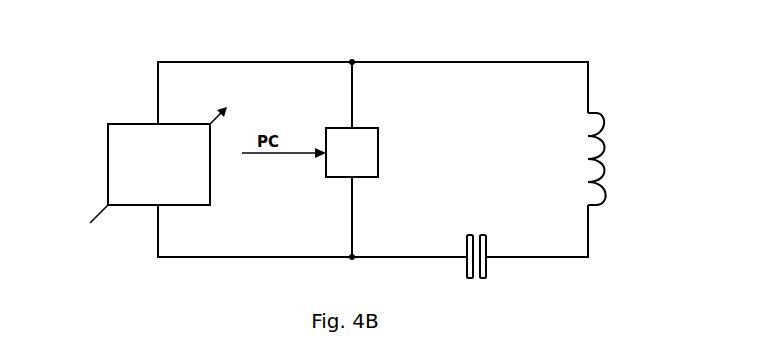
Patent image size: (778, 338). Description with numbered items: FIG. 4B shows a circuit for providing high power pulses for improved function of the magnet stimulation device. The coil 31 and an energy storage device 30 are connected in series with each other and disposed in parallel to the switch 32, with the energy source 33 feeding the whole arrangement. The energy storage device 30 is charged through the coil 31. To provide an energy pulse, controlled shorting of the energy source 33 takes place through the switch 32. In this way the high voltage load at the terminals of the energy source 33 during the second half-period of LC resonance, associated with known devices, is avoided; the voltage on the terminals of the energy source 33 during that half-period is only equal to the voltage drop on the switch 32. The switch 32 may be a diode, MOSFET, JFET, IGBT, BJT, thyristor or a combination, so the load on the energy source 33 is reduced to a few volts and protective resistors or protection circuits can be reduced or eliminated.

The energy storage device 30 is at (487, 242).
The coil 31 is at (600, 152).
The switch 32 is at (381, 153).
The energy source 33 is at (108, 153).